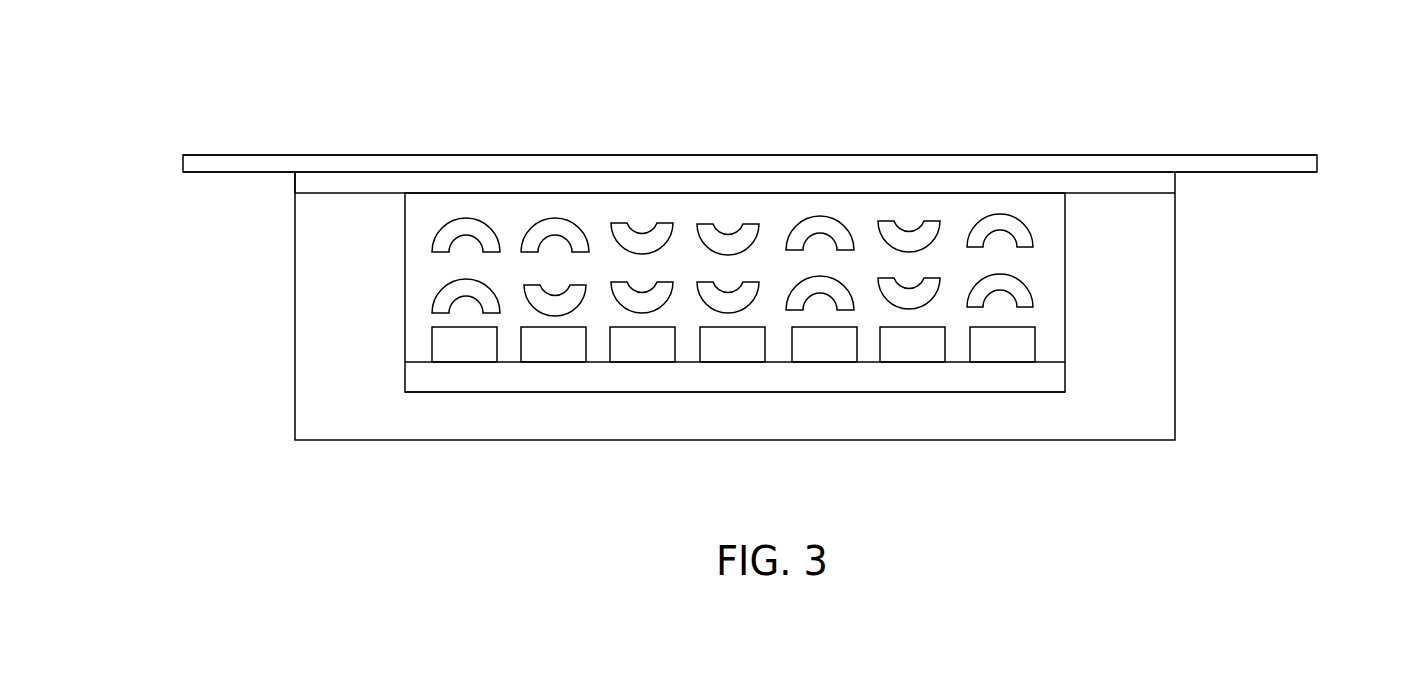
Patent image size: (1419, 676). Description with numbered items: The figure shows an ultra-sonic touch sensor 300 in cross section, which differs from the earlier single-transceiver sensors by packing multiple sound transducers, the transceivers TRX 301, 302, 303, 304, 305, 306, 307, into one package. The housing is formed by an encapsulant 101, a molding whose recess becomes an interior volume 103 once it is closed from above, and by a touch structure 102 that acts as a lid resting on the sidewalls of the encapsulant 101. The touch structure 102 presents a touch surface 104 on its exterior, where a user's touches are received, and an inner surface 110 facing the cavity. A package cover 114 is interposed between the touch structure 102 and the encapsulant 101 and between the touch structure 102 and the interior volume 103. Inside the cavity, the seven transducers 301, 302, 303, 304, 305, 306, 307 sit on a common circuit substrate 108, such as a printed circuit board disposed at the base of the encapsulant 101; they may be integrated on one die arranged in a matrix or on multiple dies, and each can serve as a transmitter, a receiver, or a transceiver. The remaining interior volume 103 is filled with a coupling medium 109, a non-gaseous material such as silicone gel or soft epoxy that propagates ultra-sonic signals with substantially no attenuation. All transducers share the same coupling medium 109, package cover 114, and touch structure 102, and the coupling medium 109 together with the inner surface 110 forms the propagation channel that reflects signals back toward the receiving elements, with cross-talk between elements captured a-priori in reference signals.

The ultra-sonic touch sensor 300 is at (197, 74).
The touch structure 102 is at (1317, 164).
The touch surface 104 is at (928, 154).
The inner surface 110 is at (566, 172).
The package cover 114 is at (300, 181).
The encapsulant 101 is at (330, 305).
The interior volume 103 is at (423, 212).
The coupling medium 109 is at (1032, 287).
The common circuit substrate 108 is at (1053, 375).
The sound transducer 301 is at (465, 362).
The sound transducer 302 is at (554, 362).
The sound transducer 303 is at (643, 362).
The sound transducer 304 is at (733, 362).
The sound transducer 305 is at (824, 362).
The sound transducer 306 is at (913, 362).
The sound transducer 307 is at (1003, 362).